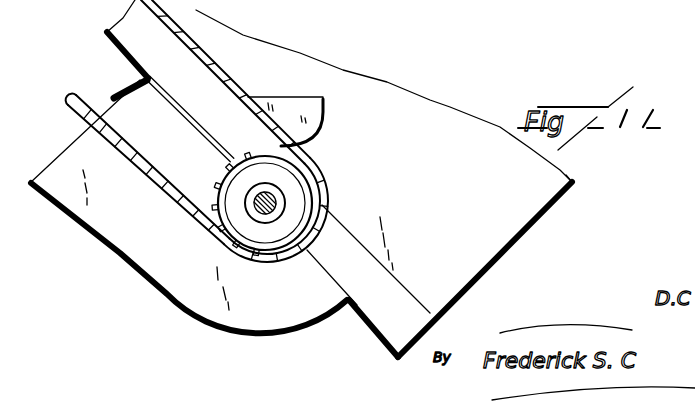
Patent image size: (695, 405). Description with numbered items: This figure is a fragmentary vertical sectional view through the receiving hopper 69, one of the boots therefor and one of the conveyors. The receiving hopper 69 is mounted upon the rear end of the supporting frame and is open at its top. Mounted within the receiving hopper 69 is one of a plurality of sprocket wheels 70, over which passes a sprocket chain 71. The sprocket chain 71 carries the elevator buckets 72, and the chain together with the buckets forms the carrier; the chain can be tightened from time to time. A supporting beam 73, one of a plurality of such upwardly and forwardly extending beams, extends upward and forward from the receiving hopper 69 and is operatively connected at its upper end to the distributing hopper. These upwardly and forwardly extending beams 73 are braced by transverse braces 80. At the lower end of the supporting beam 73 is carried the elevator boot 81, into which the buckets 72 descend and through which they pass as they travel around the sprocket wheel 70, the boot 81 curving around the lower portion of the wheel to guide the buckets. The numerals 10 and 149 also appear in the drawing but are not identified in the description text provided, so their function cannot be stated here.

The receiving hopper 69 is at (448, 123).
The sprocket wheel 70 is at (297, 190).
The sprocket chain 71 is at (156, 192).
The elevator bucket 72 is at (312, 110).
The supporting beam 73 is at (123, 18).
The transverse brace 80 is at (122, 90).
The elevator boot 81 is at (177, 287).
The frame 10 is at (444, 0).
The member 149 is at (608, 0).